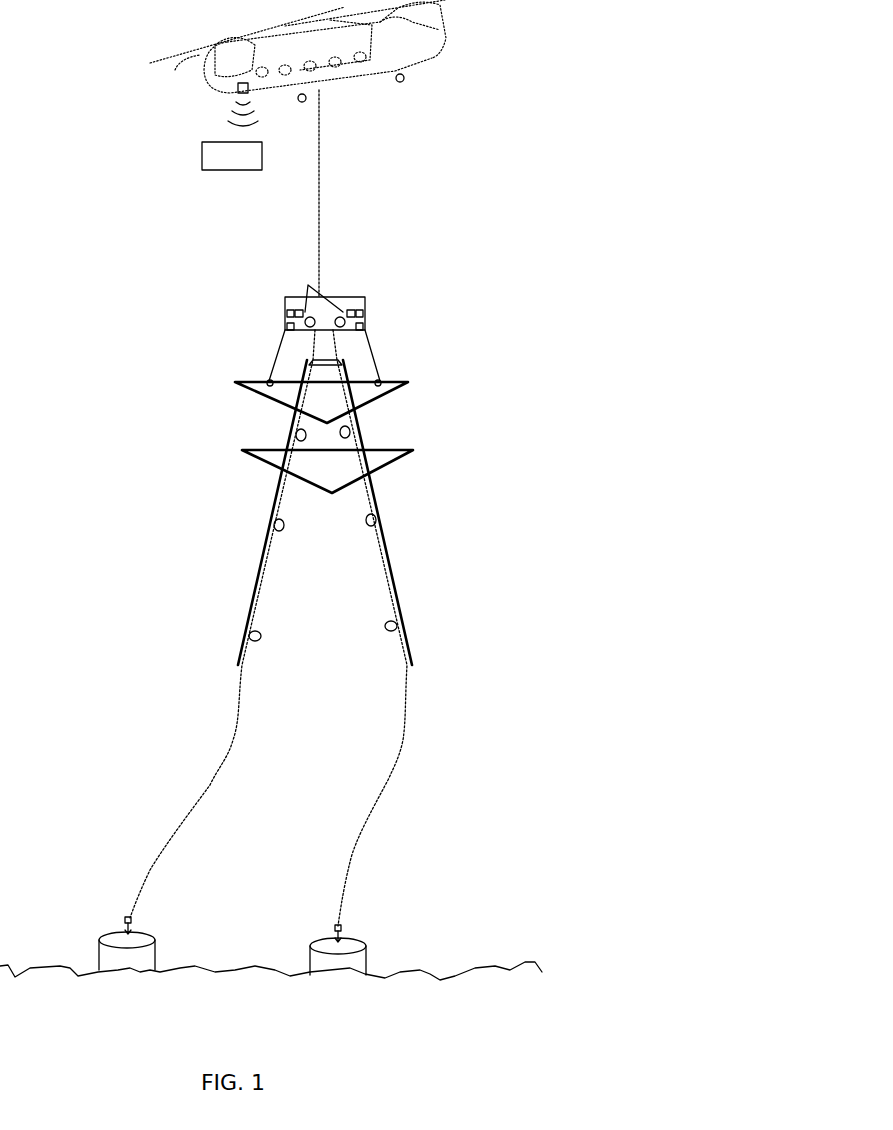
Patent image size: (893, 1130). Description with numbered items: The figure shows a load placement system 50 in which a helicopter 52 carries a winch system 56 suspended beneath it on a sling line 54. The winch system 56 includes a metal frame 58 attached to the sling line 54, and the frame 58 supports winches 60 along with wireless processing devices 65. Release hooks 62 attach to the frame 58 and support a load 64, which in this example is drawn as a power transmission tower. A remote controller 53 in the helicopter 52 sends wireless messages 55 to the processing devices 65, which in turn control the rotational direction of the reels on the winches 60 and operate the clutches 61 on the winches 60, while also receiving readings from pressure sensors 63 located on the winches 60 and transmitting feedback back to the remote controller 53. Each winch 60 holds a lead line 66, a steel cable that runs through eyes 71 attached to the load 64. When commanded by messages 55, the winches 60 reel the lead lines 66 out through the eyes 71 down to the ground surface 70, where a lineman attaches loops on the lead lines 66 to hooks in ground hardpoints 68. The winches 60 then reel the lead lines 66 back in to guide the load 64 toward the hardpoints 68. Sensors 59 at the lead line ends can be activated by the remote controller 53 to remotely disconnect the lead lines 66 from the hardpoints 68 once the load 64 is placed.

The load placement system 50 is at (281, 600).
The helicopter 52 is at (430, 46).
The remote controller 53 is at (238, 94).
The sling line 54 is at (318, 213).
The wireless messages 55 is at (232, 156).
The winch system 56 is at (352, 442).
The metal frame 58 is at (345, 297).
The sensors 59 is at (127, 917).
The winches 60 is at (287, 308).
The clutches 61 is at (288, 325).
The release hooks 62 is at (283, 356).
The pressure sensors 63 is at (317, 287).
The load 64 is at (258, 457).
The wireless processing devices 65 is at (290, 312).
The lead lines 66 is at (220, 768).
The ground hardpoints 68 is at (107, 931).
The ground surface 70 is at (513, 961).
The eyes 71 is at (383, 625).